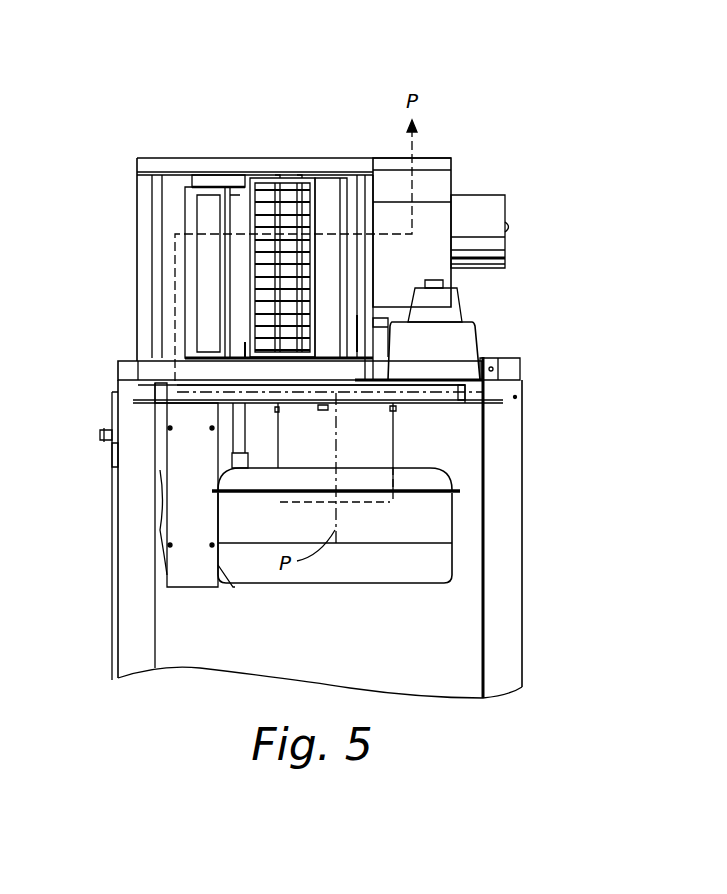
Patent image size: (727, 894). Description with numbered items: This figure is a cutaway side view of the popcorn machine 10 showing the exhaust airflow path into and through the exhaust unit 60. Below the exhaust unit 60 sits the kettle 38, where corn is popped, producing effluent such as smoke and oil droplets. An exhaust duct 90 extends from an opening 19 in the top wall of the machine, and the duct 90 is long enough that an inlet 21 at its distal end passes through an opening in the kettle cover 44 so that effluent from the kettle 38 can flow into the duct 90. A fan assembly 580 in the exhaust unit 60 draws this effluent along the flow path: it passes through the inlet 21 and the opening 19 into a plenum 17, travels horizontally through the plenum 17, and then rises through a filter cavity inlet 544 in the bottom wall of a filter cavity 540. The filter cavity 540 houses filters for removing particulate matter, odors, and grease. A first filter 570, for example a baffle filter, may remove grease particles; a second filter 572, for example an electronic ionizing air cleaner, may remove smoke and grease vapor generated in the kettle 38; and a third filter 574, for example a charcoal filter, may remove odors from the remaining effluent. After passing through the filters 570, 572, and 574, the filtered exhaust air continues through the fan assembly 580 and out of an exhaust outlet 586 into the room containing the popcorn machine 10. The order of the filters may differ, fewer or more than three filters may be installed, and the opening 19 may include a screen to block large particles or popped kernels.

The popcorn machine 10 is at (130, 80).
The plenum 17 is at (448, 393).
The opening 19 is at (300, 400).
The inlet 21 is at (390, 503).
The kettle 38 is at (455, 517).
The kettle cover 44 is at (455, 480).
The exhaust unit 60 is at (140, 253).
The exhaust duct 90 is at (393, 430).
The filter cavity 540 is at (175, 208).
The filter cavity inlet 544 is at (170, 358).
The first filter 570 is at (193, 195).
The second filter 572 is at (277, 170).
The third filter 574 is at (333, 192).
The fan assembly 580 is at (423, 253).
The exhaust outlet 586 is at (440, 158).